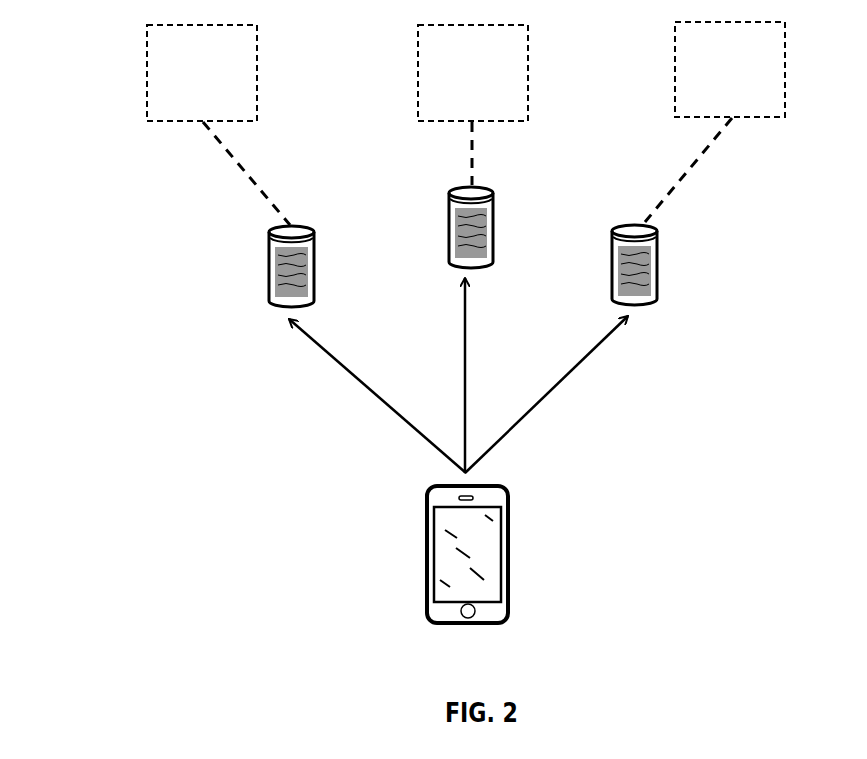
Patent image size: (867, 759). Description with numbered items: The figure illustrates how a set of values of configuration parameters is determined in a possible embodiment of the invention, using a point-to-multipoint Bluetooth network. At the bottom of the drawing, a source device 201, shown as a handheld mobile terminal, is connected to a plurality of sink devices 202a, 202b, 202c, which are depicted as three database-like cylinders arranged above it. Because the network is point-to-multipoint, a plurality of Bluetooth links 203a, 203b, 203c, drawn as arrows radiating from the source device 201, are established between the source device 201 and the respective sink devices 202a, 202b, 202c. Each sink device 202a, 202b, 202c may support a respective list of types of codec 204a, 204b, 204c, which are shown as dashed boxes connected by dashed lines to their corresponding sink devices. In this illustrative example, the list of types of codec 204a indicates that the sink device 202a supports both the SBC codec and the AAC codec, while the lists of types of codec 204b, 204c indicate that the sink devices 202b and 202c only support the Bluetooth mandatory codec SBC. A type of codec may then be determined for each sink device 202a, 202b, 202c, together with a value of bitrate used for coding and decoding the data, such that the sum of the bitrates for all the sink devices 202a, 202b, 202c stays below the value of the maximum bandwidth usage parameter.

The source device 201 is at (427, 548).
The sink device 202a is at (269, 268).
The sink device 202b is at (449, 230).
The sink device 202c is at (657, 265).
The Bluetooth link 203a is at (347, 372).
The Bluetooth link 203b is at (463, 378).
The Bluetooth link 203c is at (562, 383).
The list of types of codec 204a is at (147, 78).
The list of types of codec 204b is at (418, 78).
The list of types of codec 204c is at (675, 78).